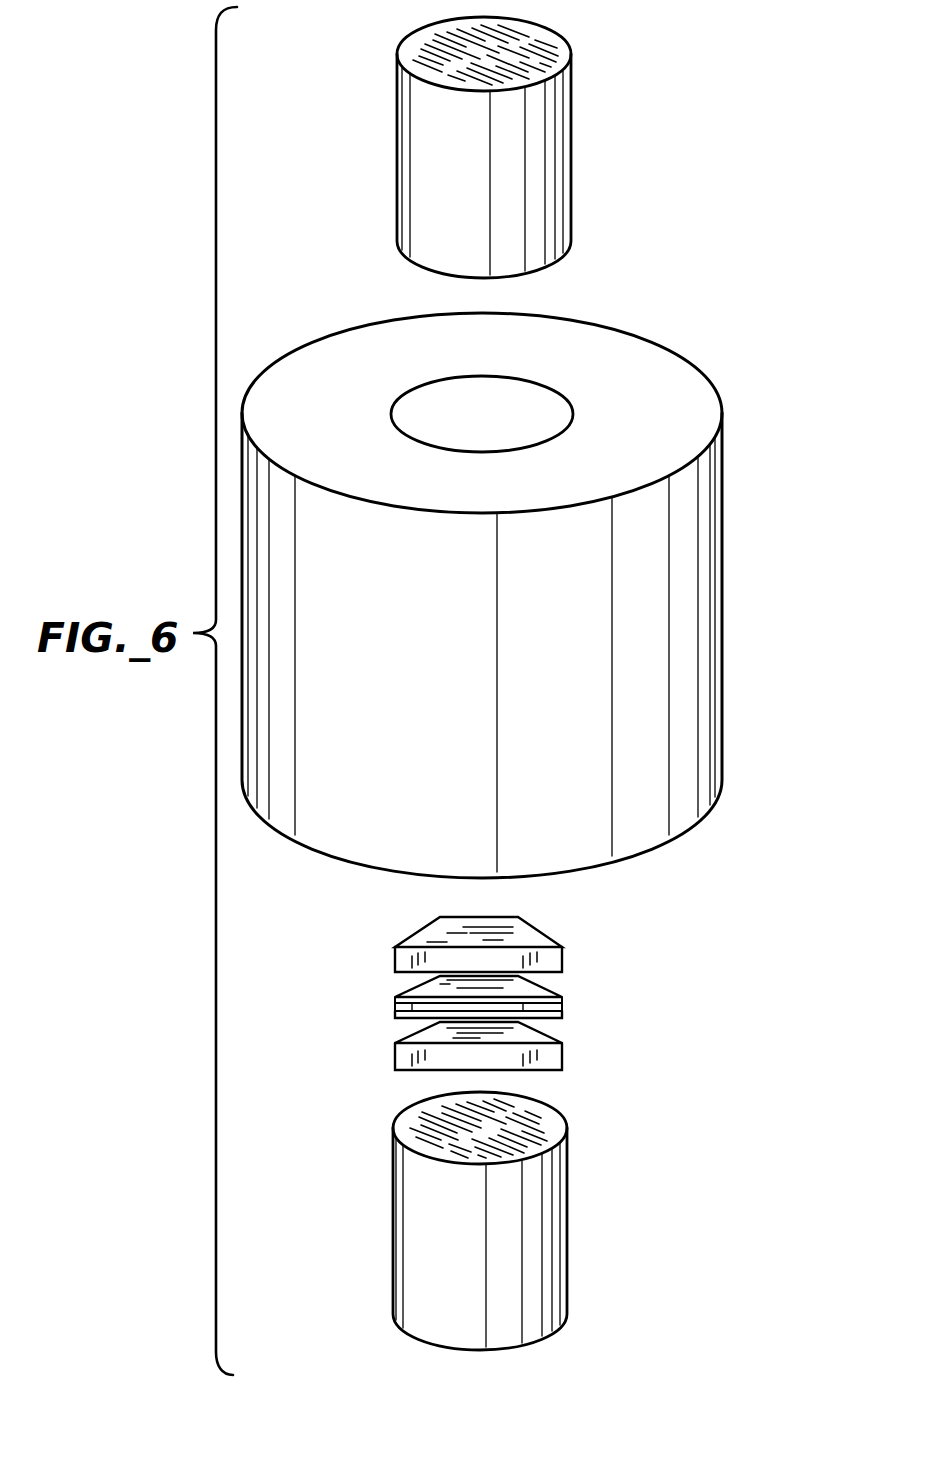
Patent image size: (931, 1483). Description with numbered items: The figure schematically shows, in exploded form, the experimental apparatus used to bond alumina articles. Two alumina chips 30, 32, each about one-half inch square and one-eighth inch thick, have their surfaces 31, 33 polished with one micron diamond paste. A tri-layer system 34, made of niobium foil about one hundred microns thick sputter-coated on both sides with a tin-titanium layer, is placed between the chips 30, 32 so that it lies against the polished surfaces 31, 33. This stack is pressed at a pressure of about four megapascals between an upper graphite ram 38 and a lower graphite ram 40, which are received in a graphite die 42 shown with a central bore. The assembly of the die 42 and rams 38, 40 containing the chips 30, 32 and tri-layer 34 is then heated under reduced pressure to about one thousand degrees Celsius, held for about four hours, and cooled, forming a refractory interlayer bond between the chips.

The graphite ram 38 is at (563, 175).
The graphite die 42 is at (705, 598).
The alumina chip 30 is at (555, 943).
The surface to be bonded 31 is at (550, 978).
The tri-layer system 34 is at (560, 1007).
The surface to be bonded 33 is at (548, 1032).
The alumina chip 32 is at (553, 1065).
The graphite ram 40 is at (562, 1247).